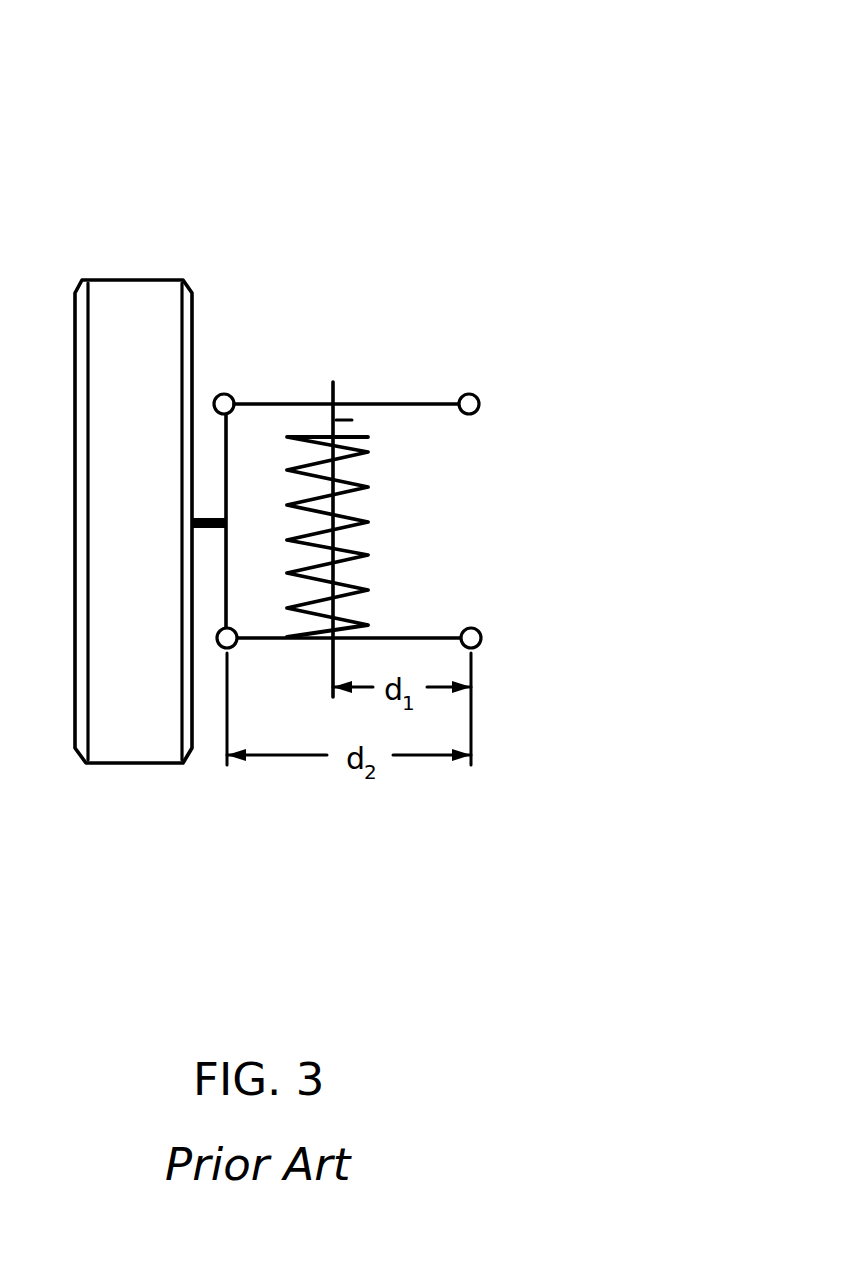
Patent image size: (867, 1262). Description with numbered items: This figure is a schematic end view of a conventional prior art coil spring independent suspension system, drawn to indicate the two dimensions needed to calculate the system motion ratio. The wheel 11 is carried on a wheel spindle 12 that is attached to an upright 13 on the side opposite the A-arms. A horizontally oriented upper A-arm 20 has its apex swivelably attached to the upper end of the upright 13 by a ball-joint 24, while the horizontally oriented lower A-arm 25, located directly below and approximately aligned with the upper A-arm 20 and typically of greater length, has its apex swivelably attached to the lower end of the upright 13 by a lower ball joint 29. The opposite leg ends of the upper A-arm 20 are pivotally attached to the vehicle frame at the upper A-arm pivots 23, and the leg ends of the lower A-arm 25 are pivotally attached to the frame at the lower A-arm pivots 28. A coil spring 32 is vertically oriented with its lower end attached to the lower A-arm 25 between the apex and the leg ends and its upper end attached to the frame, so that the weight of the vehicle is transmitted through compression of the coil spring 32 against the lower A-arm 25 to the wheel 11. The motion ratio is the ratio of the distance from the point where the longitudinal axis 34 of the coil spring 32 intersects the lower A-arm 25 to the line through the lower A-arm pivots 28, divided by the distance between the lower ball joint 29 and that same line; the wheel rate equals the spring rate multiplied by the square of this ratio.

The wheel 11 is at (128, 278).
The wheel spindle 12 is at (208, 521).
The upright 13 is at (231, 396).
The upper A-arm 20 is at (357, 403).
The upper A-arm pivots 23 is at (475, 393).
The ball-joint 24 is at (226, 457).
The lower A-arm 25 is at (393, 637).
The lower A-arm pivots 28 is at (479, 646).
The lower ball joint 29 is at (227, 648).
The coil spring 32 is at (350, 515).
The longitudinal axis 34 is at (336, 420).